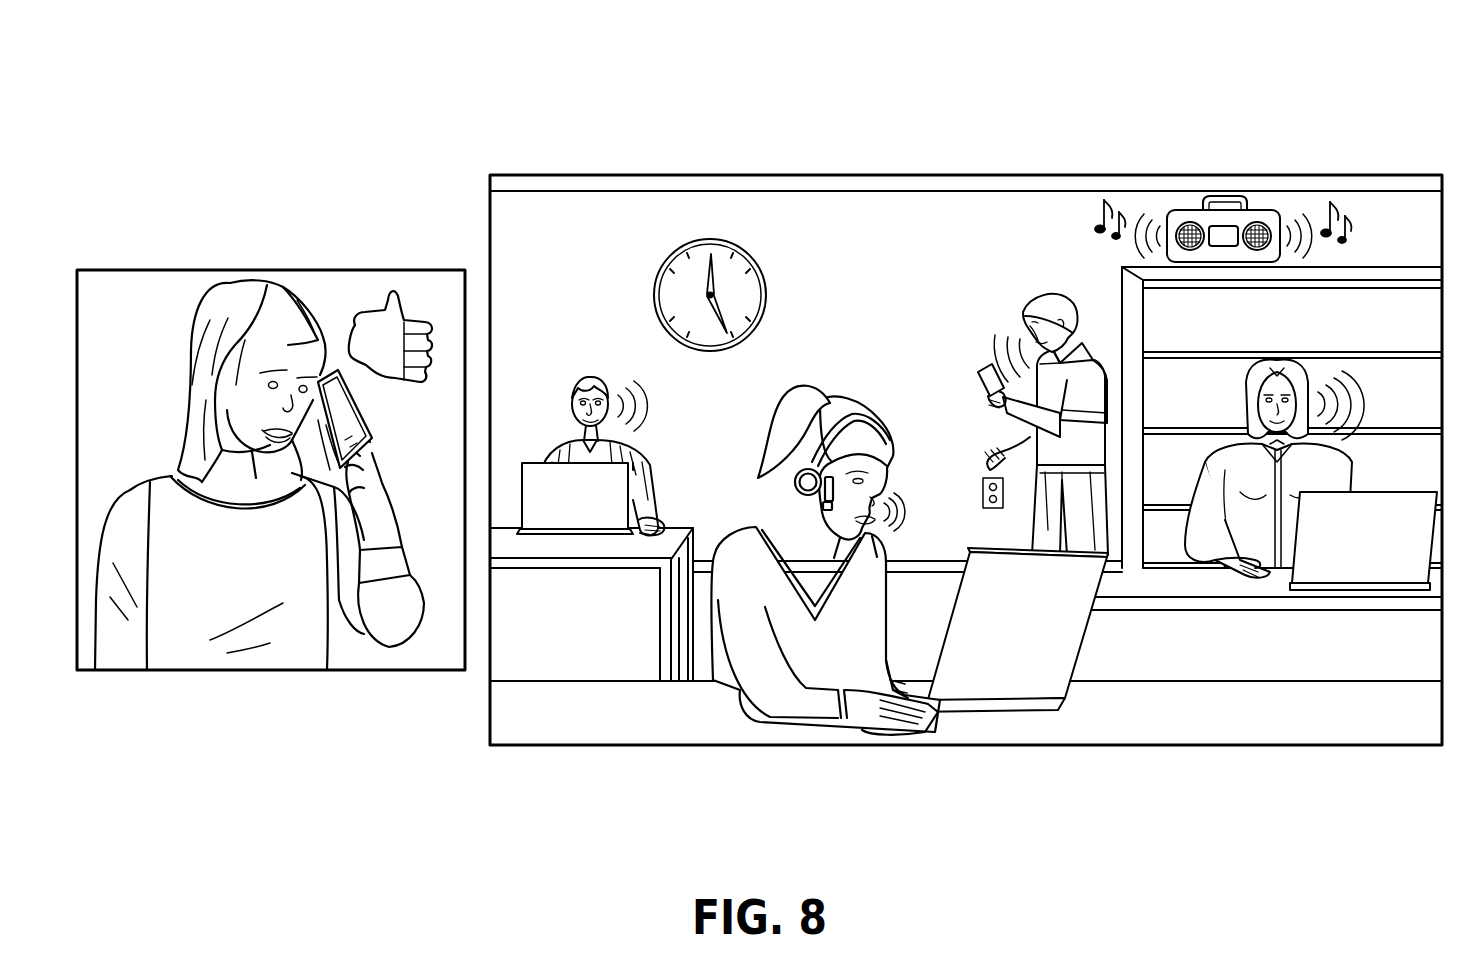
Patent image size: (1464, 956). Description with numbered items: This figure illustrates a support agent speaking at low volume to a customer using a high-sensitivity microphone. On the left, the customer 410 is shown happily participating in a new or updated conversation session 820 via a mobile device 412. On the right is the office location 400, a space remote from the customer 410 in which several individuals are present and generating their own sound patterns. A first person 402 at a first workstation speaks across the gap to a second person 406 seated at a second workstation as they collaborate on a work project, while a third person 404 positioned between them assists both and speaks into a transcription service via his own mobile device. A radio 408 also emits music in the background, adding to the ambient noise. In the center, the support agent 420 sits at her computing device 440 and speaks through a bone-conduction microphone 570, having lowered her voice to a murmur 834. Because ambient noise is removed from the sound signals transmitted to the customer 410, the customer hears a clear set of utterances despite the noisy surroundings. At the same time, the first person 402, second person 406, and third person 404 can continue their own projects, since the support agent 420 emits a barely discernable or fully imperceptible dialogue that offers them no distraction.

The conversation session 820 is at (333, 106).
The customer 410 is at (304, 290).
The mobile device 412 is at (334, 375).
The office location 400 is at (824, 215).
The first person 402 is at (578, 353).
The third person 404 is at (1036, 281).
The second person 406 is at (1230, 372).
The radio 408 is at (1190, 204).
The support agent 420 is at (882, 394).
The bone-conduction microphone 570 is at (801, 513).
The murmur 834 is at (912, 516).
The computing device 440 is at (1058, 627).